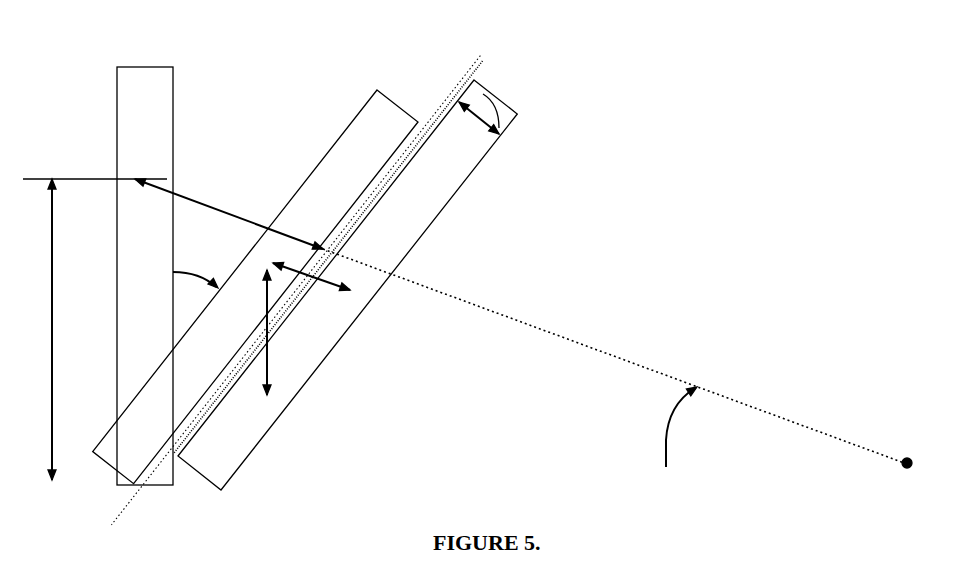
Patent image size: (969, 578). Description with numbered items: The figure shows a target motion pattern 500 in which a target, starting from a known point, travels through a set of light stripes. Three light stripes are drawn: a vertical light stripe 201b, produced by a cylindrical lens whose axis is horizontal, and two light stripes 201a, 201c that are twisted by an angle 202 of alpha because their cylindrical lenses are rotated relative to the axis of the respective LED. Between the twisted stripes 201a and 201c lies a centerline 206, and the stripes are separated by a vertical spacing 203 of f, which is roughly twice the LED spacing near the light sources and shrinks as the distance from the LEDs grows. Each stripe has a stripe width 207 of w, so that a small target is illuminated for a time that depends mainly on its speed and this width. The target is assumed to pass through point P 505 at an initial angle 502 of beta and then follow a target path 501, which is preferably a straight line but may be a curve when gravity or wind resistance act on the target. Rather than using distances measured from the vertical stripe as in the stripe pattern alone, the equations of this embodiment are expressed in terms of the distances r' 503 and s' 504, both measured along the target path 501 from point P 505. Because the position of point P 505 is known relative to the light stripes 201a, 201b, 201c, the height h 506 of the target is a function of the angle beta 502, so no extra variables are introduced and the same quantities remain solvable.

The target motion pattern 500 is at (748, 128).
The light stripe 201a is at (347, 128).
The light stripe 201b is at (117, 115).
The light stripe 201c is at (482, 163).
The centerline 206 is at (480, 58).
The stripe width 207 is at (505, 96).
The angle 202 is at (204, 253).
The vertical spacing 203 is at (270, 363).
The target path 501 is at (502, 318).
The initial angle 502 is at (665, 441).
The distance r' 503 is at (322, 282).
The distance s' 504 is at (247, 220).
The point P 505 is at (905, 457).
The height h 506 is at (95, 329).